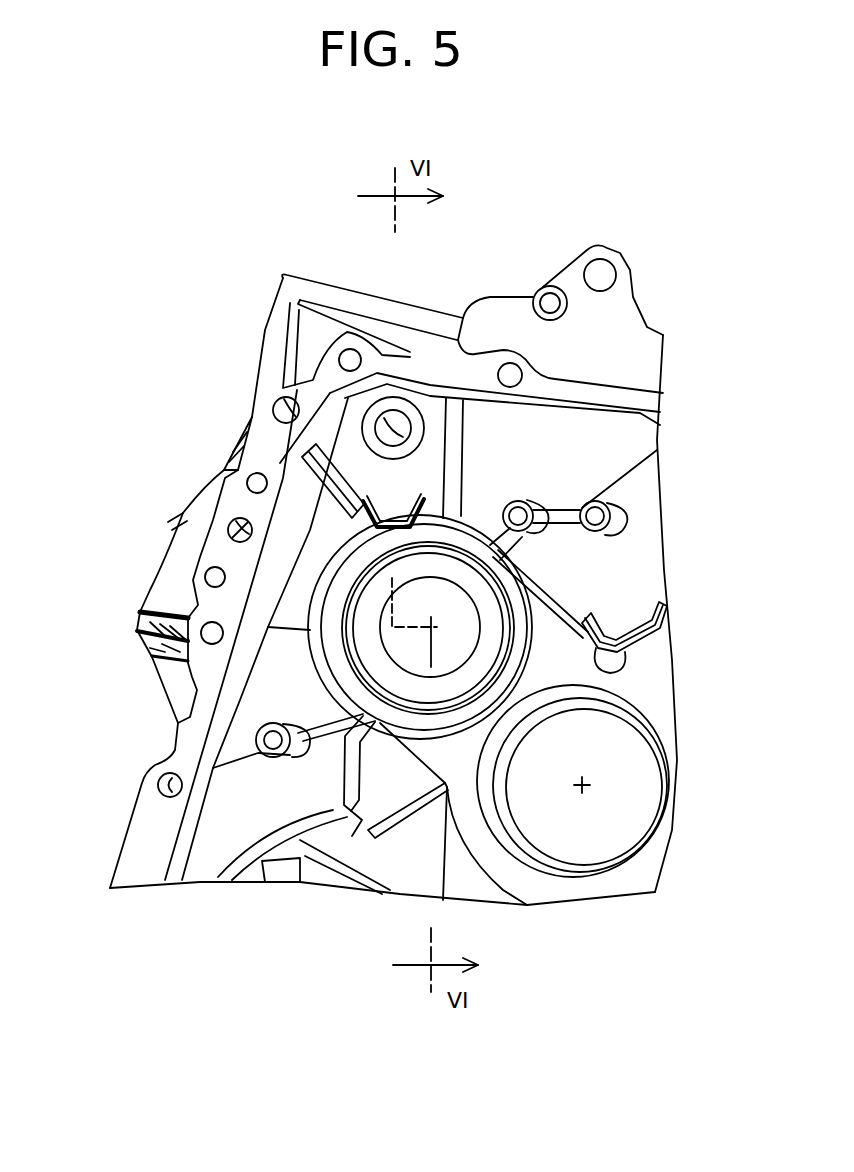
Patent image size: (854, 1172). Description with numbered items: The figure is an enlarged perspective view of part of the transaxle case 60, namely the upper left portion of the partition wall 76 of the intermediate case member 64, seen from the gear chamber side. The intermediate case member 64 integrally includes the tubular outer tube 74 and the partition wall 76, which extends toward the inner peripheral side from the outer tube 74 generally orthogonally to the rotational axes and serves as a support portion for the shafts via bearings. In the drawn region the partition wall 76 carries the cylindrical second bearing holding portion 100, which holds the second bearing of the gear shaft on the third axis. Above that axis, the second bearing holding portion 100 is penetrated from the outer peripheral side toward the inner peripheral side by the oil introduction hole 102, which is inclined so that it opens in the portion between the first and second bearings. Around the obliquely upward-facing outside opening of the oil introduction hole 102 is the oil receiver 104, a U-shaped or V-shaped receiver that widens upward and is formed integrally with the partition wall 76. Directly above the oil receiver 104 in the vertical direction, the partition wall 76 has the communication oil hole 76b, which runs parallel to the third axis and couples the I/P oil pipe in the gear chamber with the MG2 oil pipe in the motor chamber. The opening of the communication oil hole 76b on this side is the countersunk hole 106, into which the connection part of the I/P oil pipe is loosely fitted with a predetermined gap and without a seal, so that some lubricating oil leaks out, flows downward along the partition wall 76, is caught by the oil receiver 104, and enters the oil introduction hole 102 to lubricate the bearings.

The intermediate case member 64 is at (212, 893).
The transaxle case 60 is at (380, 932).
The outer tube 74 is at (155, 825).
The partition wall 76 is at (636, 572).
The communication oil hole 76b is at (418, 420).
The second bearing holding portion 100 is at (327, 670).
The oil introduction hole 102 is at (380, 533).
The oil receiver 104 is at (330, 440).
The countersunk hole 106 is at (436, 355).